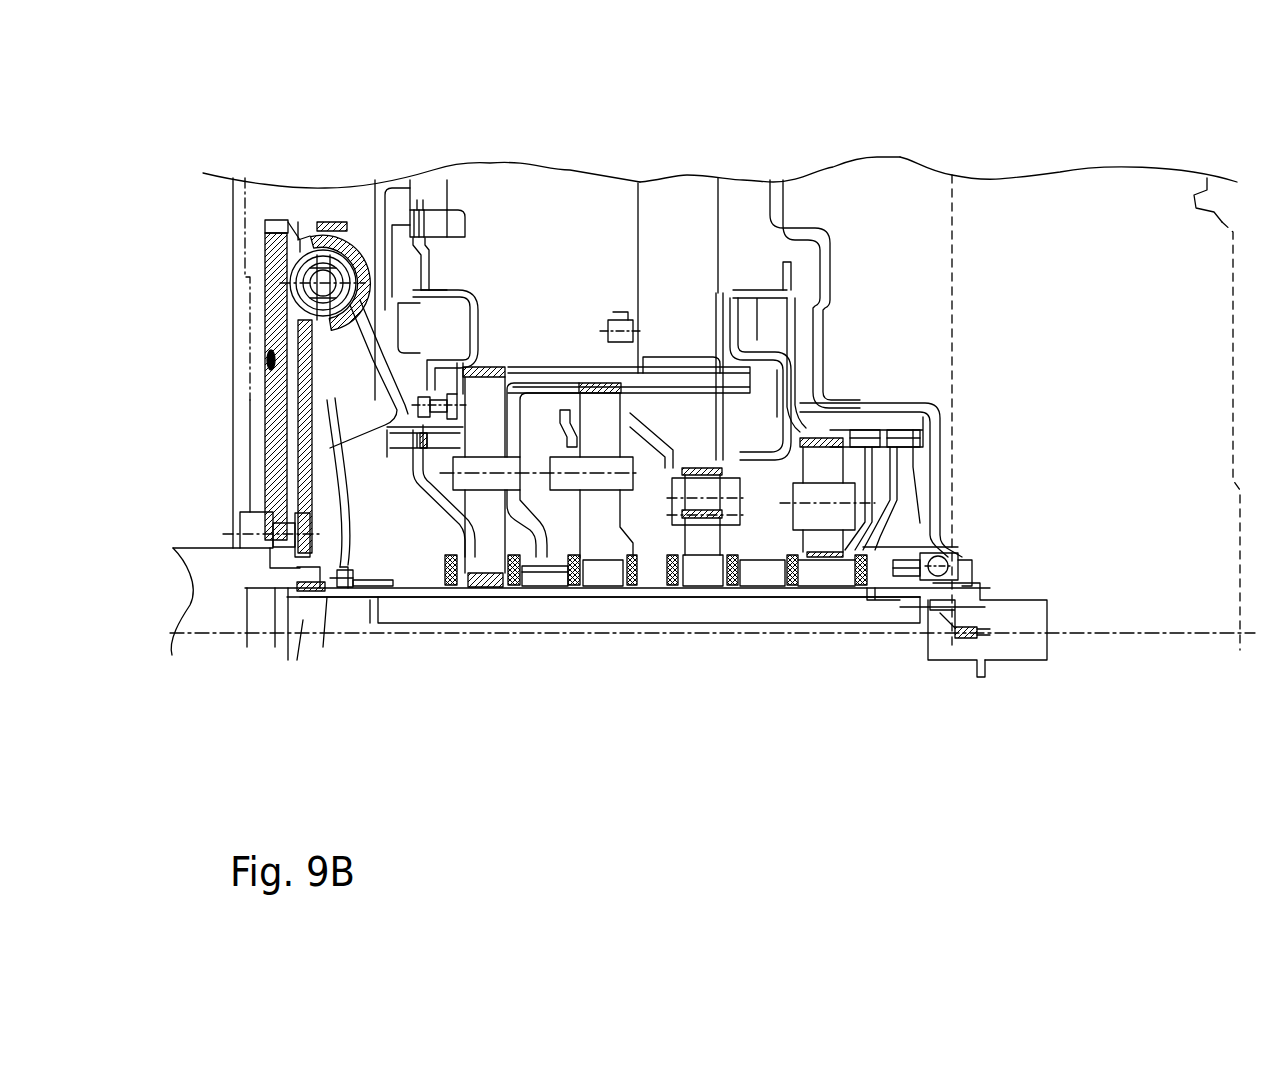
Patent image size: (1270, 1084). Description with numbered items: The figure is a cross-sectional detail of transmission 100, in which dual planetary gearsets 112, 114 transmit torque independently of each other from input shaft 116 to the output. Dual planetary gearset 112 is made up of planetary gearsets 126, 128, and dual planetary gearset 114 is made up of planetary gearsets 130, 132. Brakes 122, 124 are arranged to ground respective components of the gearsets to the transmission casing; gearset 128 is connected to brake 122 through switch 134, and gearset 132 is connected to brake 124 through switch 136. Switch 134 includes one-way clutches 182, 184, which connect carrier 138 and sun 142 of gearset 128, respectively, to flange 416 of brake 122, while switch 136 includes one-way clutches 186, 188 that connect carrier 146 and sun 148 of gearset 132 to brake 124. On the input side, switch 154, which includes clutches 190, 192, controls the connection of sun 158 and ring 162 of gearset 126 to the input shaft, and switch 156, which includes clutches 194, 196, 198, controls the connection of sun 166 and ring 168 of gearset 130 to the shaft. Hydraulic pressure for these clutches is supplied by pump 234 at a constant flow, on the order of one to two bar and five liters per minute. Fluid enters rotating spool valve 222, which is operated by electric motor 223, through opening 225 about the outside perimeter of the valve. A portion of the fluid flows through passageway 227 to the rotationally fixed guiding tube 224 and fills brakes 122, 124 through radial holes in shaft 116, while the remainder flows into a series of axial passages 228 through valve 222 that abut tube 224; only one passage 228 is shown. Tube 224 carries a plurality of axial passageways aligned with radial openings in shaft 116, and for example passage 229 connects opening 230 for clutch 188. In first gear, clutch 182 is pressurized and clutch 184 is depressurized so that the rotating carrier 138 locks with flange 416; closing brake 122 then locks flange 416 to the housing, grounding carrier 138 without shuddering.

The transmission 100 is at (1043, 197).
The dual planetary gearset 112 is at (523, 225).
The dual planetary gearset 114 is at (692, 252).
The input shaft 116 is at (297, 628).
The brake 122 is at (455, 280).
The brake 124 is at (760, 287).
The planetary gearset 126 is at (598, 422).
The planetary gearset 128 is at (485, 400).
The planetary gearset 130 is at (695, 452).
The planetary gearset 132 is at (827, 460).
The switch 134 is at (362, 407).
The switch 136 is at (878, 405).
The carrier 138 is at (487, 483).
The sun 142 is at (303, 573).
The carrier 146 is at (812, 493).
The sun 148 is at (818, 540).
The switch 154 is at (597, 550).
The switch 156 is at (770, 613).
The sun 158 is at (537, 622).
The ring 162 is at (583, 378).
The sun 166 is at (703, 553).
The ring 168 is at (716, 293).
The clutch 182 is at (437, 440).
The clutch 184 is at (395, 440).
The clutch 186 is at (880, 425).
The clutch 188 is at (905, 437).
The clutch 190 is at (543, 578).
The clutch 192 is at (603, 580).
The clutch 194 is at (703, 580).
The clutch 196 is at (763, 573).
The clutch 198 is at (825, 577).
The spool valve 222 is at (945, 670).
The electric motor 223 is at (1040, 647).
The guiding tube 224 is at (863, 610).
The opening 225 is at (967, 607).
The passageway 227 is at (937, 627).
The passage 228 is at (975, 630).
The passage 229 is at (890, 600).
The opening 230 is at (890, 585).
The pump 234 is at (987, 593).
The flange 416 is at (268, 267).